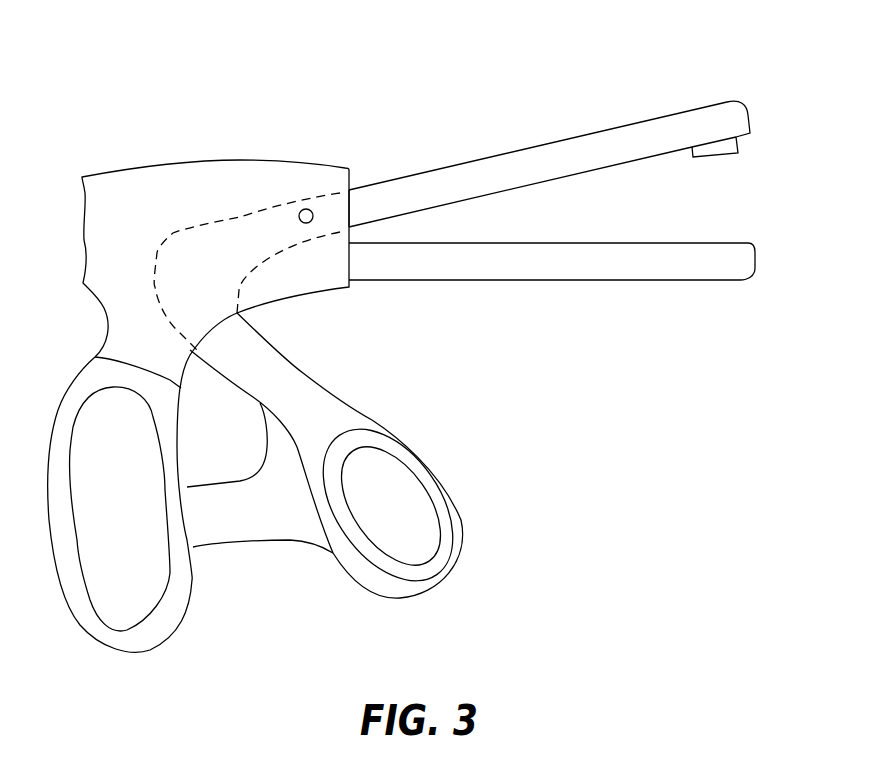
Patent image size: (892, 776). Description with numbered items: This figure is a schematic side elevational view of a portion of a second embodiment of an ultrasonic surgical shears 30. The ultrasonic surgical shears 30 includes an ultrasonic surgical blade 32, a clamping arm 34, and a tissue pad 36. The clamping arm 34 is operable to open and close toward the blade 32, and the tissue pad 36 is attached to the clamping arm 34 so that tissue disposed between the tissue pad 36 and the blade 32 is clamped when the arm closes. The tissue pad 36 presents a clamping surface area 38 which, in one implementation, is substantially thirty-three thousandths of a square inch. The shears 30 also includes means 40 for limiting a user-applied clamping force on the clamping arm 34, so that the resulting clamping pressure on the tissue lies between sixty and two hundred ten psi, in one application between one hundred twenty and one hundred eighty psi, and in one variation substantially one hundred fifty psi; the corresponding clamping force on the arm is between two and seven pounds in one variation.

The ultrasonic surgical shears 30 is at (434, 343).
The ultrasonic surgical blade 32 is at (518, 267).
The clamping arm 34 is at (584, 160).
The tissue pad 36 is at (742, 140).
The clamping surface area 38 is at (717, 155).
The means for limiting a user-applied clamping force 40 is at (253, 522).